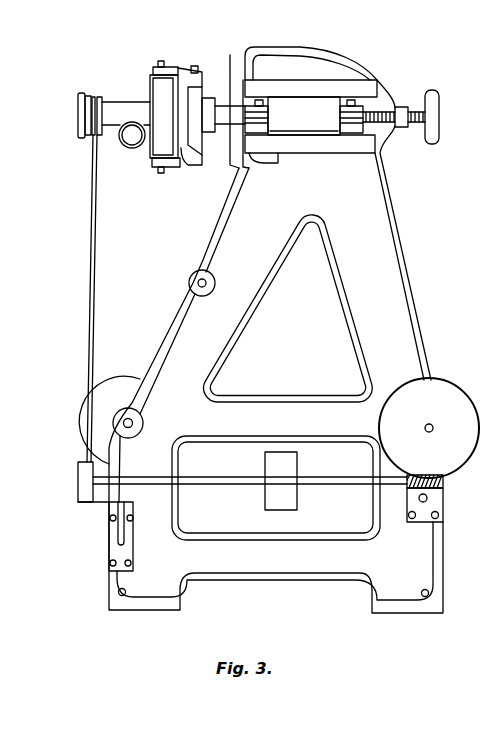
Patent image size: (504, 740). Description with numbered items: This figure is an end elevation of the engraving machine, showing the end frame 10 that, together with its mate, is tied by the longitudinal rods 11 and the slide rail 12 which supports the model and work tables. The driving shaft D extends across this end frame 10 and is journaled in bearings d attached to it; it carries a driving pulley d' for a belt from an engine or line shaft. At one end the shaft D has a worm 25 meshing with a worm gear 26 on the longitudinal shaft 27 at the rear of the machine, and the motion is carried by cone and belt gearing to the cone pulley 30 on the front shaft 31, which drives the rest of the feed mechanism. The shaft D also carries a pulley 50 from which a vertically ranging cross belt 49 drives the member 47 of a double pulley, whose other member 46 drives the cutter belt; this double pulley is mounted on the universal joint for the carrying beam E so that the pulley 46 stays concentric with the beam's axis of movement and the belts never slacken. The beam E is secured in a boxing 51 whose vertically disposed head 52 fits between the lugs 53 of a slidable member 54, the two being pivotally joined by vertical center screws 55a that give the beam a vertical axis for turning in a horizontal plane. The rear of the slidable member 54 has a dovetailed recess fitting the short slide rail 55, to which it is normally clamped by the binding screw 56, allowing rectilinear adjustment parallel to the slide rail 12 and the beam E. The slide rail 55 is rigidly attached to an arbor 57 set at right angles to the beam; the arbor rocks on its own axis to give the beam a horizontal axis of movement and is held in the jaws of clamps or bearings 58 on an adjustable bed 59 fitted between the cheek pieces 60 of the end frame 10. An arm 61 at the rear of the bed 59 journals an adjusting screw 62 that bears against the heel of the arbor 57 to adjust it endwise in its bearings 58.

The end frame 10 is at (408, 268).
The longitudinal rod 11 is at (198, 281).
The slide rail 12 is at (252, 170).
The worm 25 is at (428, 477).
The worm gear 26 is at (443, 388).
The longitudinal shaft 27 is at (431, 425).
The cone pulley 30 is at (117, 377).
The shaft 31 is at (134, 421).
The double pulley member 46 is at (80, 131).
The double pulley member 47 is at (103, 96).
The cross belt 49 is at (96, 303).
The pulley 50 is at (78, 468).
The boxing 51 is at (123, 112).
The head 52 is at (156, 145).
The lug 53 is at (178, 66).
The slidable member 54 is at (195, 164).
The slide rail 55 is at (206, 97).
The center screw 55a is at (163, 60).
The binding screw 56 is at (198, 67).
The arbor 57 is at (304, 116).
The clamp or bearing 58 is at (350, 103).
The adjustable bed 59 is at (313, 133).
The cheek piece 60 is at (304, 92).
The arm 61 is at (402, 107).
The adjusting screw 62 is at (424, 127).
The driving shaft D is at (212, 487).
The bearing d is at (104, 536).
The pulley d' is at (354, 502).
The carrying beam E is at (123, 142).